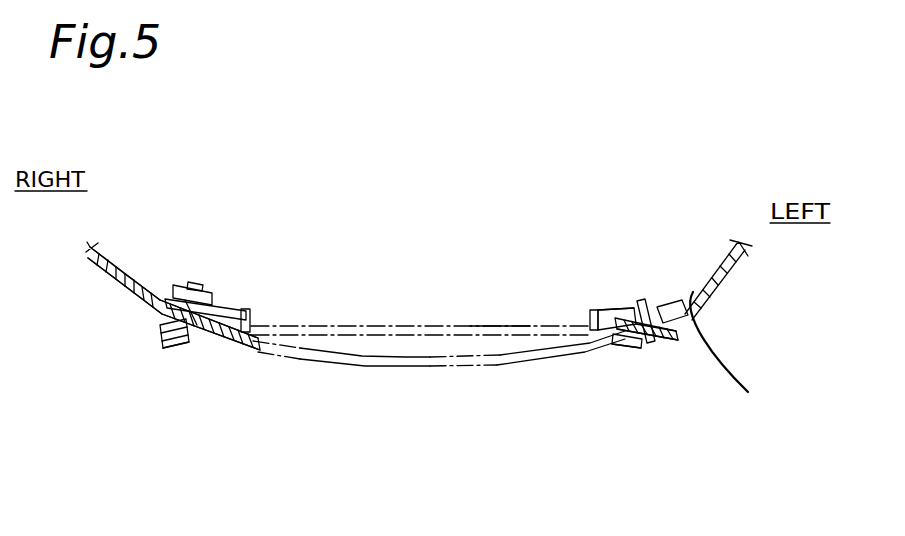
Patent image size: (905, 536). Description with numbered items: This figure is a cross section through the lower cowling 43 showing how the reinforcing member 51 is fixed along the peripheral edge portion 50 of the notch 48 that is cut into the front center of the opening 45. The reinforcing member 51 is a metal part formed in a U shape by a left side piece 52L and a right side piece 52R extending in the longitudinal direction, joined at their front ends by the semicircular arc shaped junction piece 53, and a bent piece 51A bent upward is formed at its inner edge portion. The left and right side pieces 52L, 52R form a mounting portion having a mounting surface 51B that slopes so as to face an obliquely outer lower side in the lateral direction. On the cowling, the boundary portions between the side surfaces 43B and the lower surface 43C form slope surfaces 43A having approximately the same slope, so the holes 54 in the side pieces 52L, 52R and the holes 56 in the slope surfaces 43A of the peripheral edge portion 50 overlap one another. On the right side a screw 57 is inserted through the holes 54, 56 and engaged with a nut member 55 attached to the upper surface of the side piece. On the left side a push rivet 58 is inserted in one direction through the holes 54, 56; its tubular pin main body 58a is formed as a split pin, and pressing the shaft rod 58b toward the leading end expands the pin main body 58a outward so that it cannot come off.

The lower cowling 43 is at (93, 266).
The slope surfaces 43A is at (160, 328).
The side surfaces 43B is at (118, 278).
The lower surface 43C is at (222, 343).
The opening 45 is at (254, 345).
The notch 48 is at (459, 371).
The peripheral edge portion 50 is at (205, 343).
The reinforcing member 51 is at (297, 307).
The bent piece 51A is at (250, 307).
The mounting surface 51B is at (221, 347).
The right side piece 52R is at (155, 295).
The left side piece 52L is at (680, 305).
The junction piece 53 is at (500, 326).
The holes 54 is at (205, 285).
The nut members 55 is at (178, 285).
The holes 56 is at (173, 343).
The screw 57 is at (167, 337).
The push rivet 58 is at (667, 340).
The pin main body 58a is at (630, 309).
The shaft rod 58b is at (657, 340).